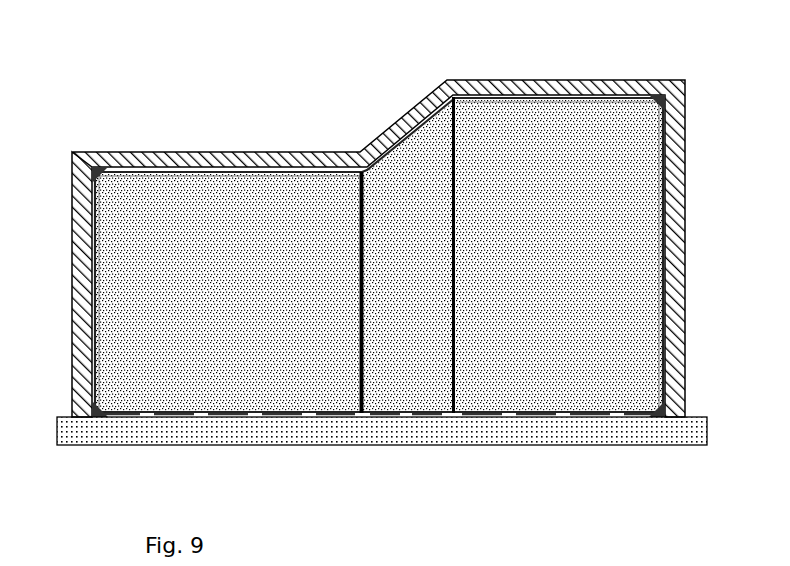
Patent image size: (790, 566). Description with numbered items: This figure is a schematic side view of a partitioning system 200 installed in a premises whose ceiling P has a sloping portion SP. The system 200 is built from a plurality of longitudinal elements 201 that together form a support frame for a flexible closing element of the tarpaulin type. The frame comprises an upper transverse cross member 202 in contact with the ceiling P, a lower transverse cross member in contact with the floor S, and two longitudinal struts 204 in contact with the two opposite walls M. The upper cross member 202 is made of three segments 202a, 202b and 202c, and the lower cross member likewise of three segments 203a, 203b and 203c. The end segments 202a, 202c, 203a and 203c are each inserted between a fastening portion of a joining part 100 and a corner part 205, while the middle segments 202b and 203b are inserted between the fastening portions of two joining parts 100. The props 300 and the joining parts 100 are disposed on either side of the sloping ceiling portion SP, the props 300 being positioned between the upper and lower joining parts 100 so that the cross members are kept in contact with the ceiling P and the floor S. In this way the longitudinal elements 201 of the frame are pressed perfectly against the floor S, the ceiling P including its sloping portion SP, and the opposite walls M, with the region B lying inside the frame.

The joining part 100 is at (352, 196).
The partitioning system 200 is at (527, 338).
The longitudinal element 201 is at (520, 98).
The upper transverse cross member 202 is at (622, 98).
The segment of upper transverse cross member 202a is at (617, 114).
The segment of upper transverse cross member 202b is at (420, 103).
The segment of upper transverse cross member 202c is at (140, 176).
The segment of lower transverse cross member 203a is at (577, 416).
The segment of lower transverse cross member 203b is at (380, 445).
The segment of lower transverse cross member 203c is at (232, 417).
The longitudinal strut 204 is at (90, 313).
The corner part 205 is at (110, 193).
The prop 300 is at (360, 308).
The wall M is at (72, 224).
The ceiling P is at (208, 152).
The floor S is at (205, 436).
The sloping portion SP is at (377, 138).
The bulk material B is at (598, 340).